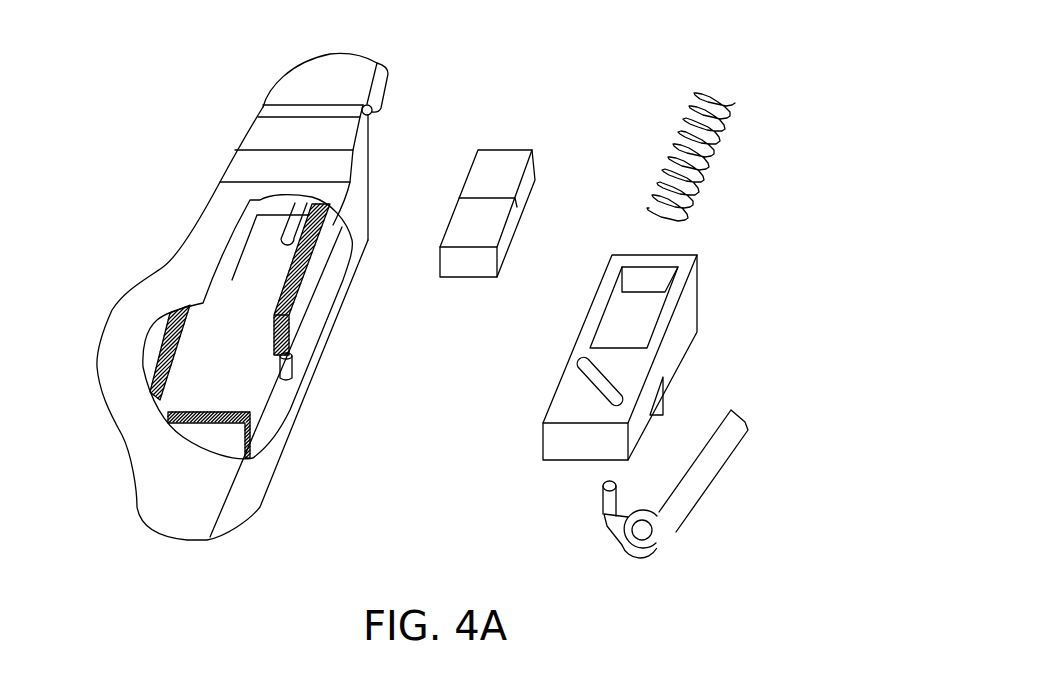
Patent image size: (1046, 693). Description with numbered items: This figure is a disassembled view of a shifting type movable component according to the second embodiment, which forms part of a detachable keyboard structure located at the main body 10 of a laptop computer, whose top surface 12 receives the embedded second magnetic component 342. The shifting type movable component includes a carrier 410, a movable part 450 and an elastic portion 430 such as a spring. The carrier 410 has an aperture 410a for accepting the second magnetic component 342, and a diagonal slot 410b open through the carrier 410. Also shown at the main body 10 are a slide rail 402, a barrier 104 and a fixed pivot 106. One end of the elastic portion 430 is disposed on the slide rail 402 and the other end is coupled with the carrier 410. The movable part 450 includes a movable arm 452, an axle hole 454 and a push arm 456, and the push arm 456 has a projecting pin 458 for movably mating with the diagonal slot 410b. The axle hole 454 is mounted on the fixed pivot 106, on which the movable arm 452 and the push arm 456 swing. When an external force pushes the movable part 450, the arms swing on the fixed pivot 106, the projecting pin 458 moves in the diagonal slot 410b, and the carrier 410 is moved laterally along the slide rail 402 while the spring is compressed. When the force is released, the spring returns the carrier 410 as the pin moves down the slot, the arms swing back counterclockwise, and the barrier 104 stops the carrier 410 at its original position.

The main body 10 is at (379, 188).
The top surface 12 is at (143, 457).
The barrier 104 is at (218, 443).
The fixed pivot 106 is at (292, 374).
The second magnetic component 342 is at (503, 148).
The slide rail 402 is at (287, 237).
The carrier 410 is at (543, 442).
The aperture 410a is at (623, 331).
The diagonal slot 410b is at (578, 365).
The elastic portion 430 is at (677, 157).
The movable part 450 is at (689, 478).
The movable arm 452 is at (718, 430).
The axle hole 454 is at (665, 538).
The push arm 456 is at (610, 524).
The projecting pin 458 is at (601, 496).